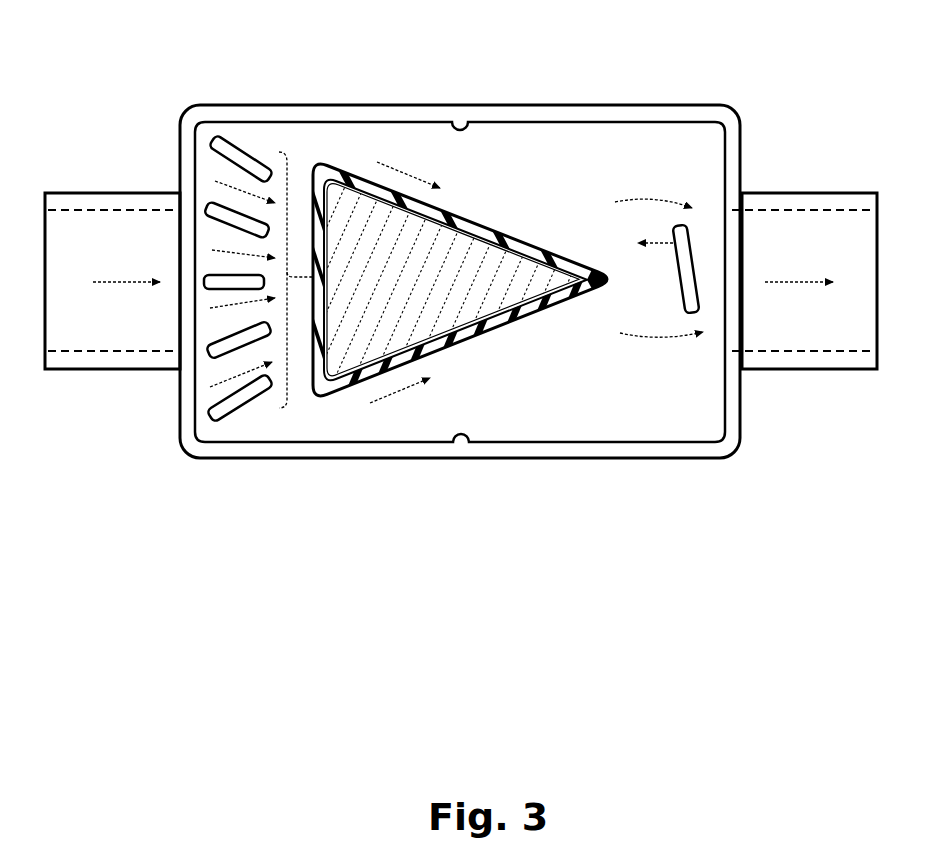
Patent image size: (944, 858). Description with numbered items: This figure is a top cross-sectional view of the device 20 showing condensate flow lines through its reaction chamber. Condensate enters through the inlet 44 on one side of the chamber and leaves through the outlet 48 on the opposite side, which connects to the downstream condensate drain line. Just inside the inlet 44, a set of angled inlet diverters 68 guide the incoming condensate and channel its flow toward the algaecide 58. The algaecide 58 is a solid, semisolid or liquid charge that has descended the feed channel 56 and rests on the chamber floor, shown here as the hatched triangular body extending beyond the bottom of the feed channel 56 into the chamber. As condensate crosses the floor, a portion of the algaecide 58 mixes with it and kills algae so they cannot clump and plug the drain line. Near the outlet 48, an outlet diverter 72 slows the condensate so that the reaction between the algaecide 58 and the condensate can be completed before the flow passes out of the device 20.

The device 20 is at (262, 72).
The inlet 44 is at (112, 193).
The outlet 48 is at (801, 371).
The feed channel 56 is at (441, 351).
The algaecide 58 is at (493, 285).
The inlet diverters 68 is at (332, 273).
The outlet diverter 72 is at (699, 270).